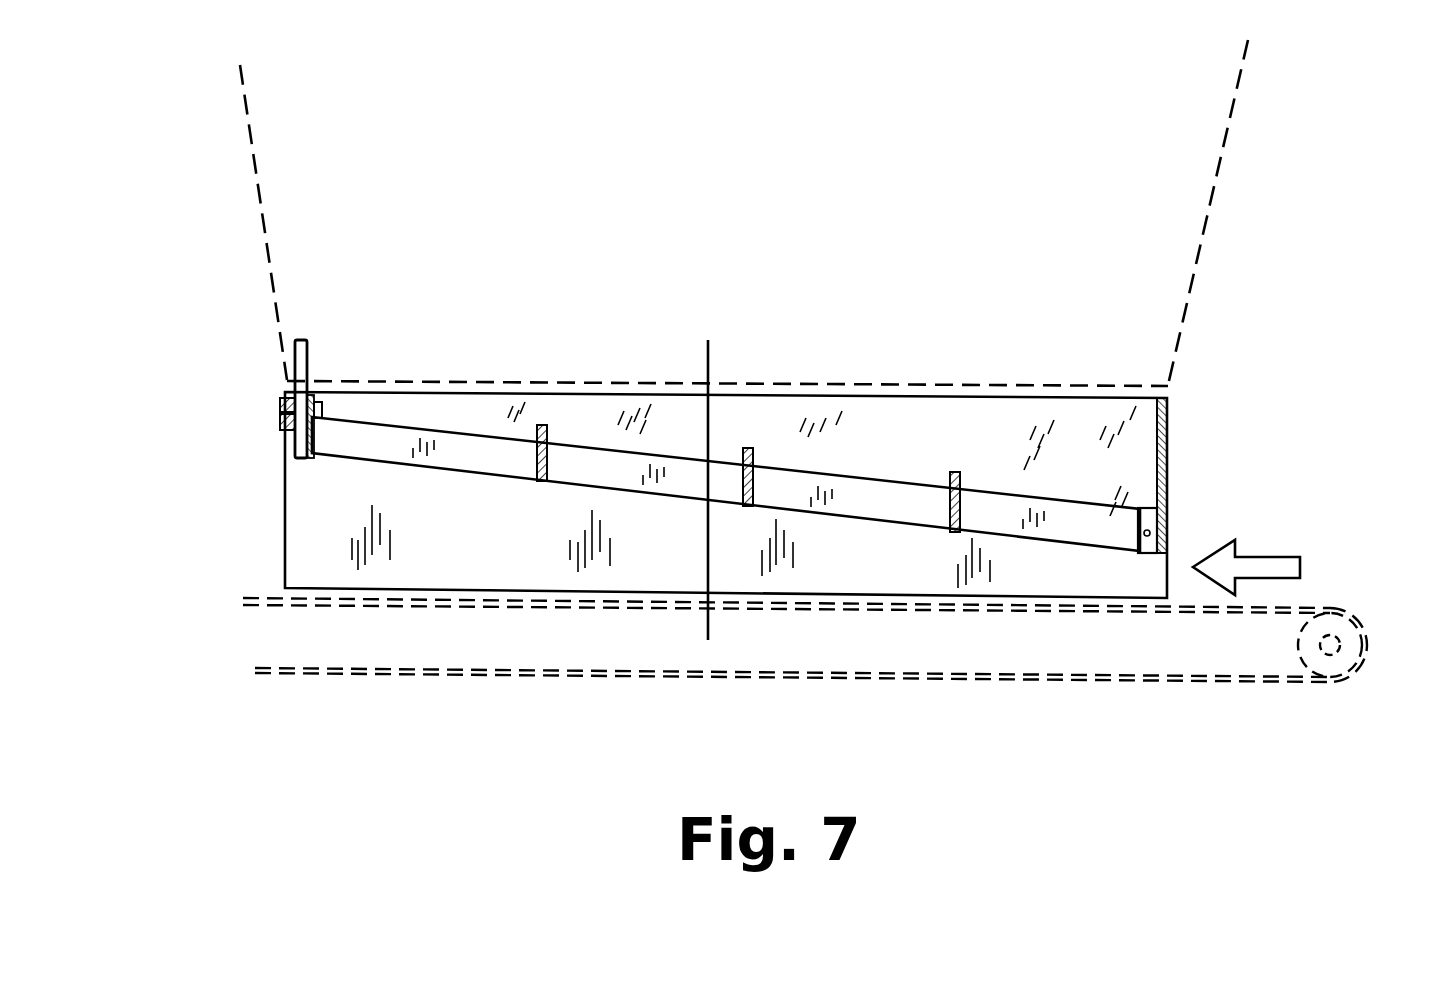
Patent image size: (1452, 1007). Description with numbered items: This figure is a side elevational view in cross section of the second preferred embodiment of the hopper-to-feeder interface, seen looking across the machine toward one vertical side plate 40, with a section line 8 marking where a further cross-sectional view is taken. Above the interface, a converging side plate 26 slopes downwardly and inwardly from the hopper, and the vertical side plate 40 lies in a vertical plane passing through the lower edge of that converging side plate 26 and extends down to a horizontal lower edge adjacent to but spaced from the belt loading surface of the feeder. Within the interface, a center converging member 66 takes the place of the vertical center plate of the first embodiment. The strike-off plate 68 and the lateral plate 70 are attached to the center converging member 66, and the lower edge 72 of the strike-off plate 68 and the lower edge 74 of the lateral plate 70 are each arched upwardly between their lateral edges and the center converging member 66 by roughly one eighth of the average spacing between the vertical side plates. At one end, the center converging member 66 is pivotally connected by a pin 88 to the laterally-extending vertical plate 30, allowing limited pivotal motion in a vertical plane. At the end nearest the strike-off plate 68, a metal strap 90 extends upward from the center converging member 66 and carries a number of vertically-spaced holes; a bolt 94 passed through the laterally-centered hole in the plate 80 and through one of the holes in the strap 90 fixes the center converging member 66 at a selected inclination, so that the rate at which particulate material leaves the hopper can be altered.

The section line 8- 8 is at (712, 340).
The converging side plate 26 is at (862, 418).
The laterally-extending vertical plate 30 is at (1167, 443).
The vertical side plate 40 is at (443, 535).
The center converging member 66 is at (873, 495).
The strike-off plate 68 is at (312, 413).
The lateral plate 70 is at (542, 436).
The lower edge of the strike-off plate 72 is at (312, 454).
The lower edge of the lateral plate 74 is at (542, 484).
The plate 80 is at (280, 428).
The pin 88 is at (1167, 532).
The metal strap 90 is at (306, 350).
The bolt 94 is at (280, 403).